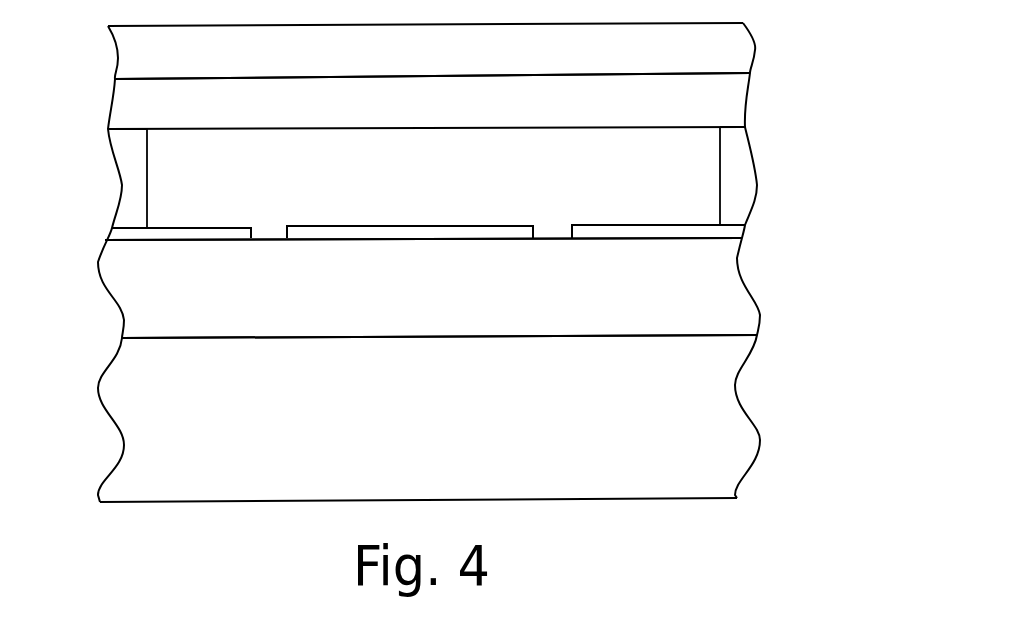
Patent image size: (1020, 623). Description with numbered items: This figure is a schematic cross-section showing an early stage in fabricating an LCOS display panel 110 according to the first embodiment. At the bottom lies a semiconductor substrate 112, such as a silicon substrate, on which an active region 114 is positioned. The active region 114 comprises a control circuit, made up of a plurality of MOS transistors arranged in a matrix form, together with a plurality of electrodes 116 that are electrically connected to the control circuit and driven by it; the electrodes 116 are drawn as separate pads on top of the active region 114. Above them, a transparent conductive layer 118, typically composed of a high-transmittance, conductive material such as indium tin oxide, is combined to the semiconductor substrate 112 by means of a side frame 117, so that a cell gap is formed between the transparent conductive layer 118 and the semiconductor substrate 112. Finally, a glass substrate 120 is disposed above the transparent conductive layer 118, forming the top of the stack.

The LCOS display panel 110 is at (818, 388).
The semiconductor substrate 112 is at (460, 443).
The active region 114 is at (450, 309).
The electrodes 116 is at (727, 231).
The side frame 117 is at (133, 184).
The transparent conductive layer 118 is at (460, 116).
The glass substrate 120 is at (472, 64).